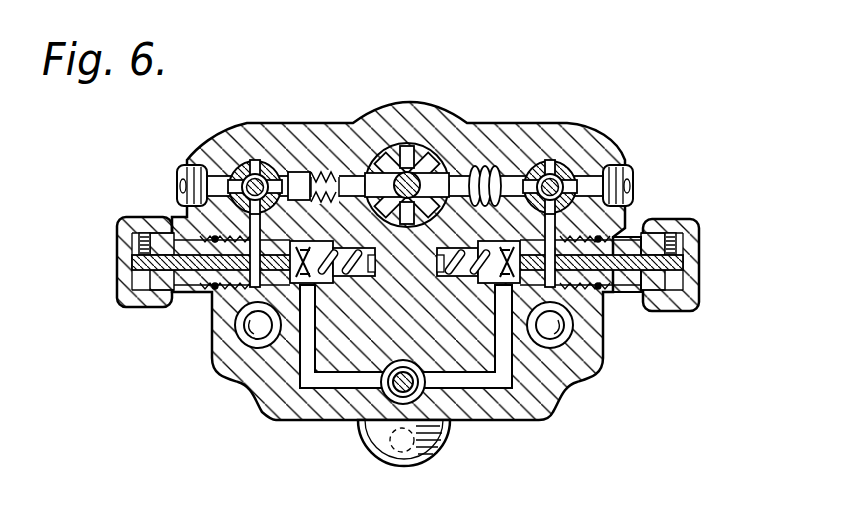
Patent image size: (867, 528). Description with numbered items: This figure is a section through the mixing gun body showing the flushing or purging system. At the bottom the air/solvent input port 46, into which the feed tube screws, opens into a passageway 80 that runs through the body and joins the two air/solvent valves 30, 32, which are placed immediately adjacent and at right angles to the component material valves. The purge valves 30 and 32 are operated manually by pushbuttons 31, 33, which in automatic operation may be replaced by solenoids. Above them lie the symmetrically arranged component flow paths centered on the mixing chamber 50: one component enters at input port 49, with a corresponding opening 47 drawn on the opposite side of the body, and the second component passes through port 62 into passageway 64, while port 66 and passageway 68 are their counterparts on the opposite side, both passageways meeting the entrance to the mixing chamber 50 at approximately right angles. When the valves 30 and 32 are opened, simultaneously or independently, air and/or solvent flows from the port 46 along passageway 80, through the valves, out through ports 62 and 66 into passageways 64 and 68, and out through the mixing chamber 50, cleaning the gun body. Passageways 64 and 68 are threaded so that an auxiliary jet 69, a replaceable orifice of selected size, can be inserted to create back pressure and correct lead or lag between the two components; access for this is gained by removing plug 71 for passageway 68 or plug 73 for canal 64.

The air/solvent valve 30 is at (205, 232).
The pushbutton 31 is at (118, 240).
The air/solvent valve 32 is at (614, 234).
The pushbutton 33 is at (698, 240).
The air/solvent input port 46 is at (392, 398).
The right bore 47 is at (552, 328).
The input port 49 is at (254, 325).
The mixing chamber 50 is at (417, 145).
The port 62 is at (567, 173).
The passageway 64 is at (478, 167).
The port 66 is at (265, 165).
The passageway 68 is at (297, 177).
The auxiliary jet 69 is at (327, 167).
The plug 71 is at (180, 175).
The plug 73 is at (626, 172).
The passageway 80 is at (488, 385).